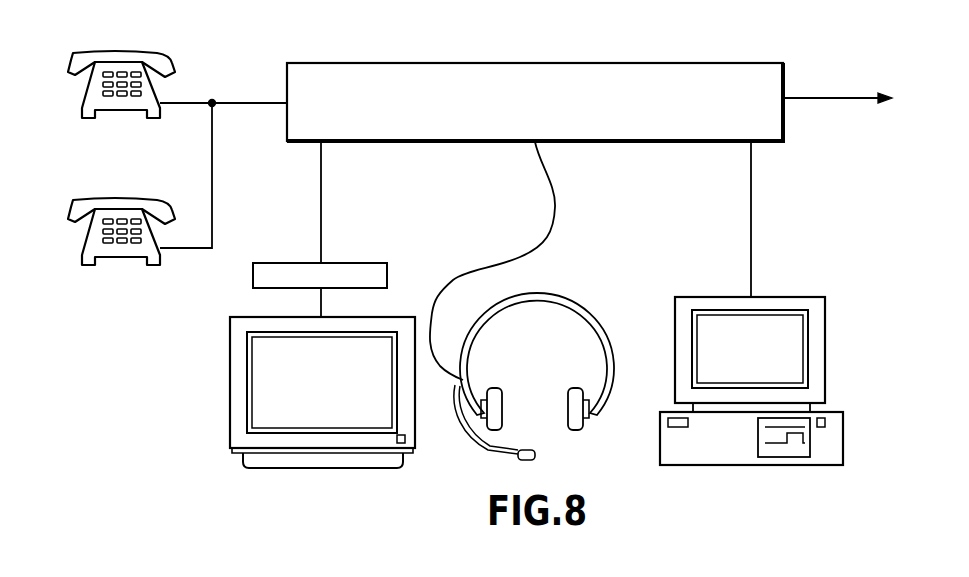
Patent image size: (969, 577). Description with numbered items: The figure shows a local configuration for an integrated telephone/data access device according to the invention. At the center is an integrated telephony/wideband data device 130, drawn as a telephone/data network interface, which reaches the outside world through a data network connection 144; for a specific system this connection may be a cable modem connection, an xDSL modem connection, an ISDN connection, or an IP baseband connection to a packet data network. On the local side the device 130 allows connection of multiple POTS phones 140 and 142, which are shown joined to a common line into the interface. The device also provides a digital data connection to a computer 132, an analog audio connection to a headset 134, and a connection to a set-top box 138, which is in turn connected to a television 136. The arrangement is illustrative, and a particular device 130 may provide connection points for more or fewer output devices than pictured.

The integrated telephony/wideband data device 130 is at (535, 63).
The computer 132 is at (802, 296).
The headset 134 is at (605, 325).
The television 136 is at (229, 386).
The set-top box 138 is at (280, 262).
The POTS phone 140 is at (122, 197).
The POTS phone 142 is at (122, 51).
The data network connection 144 is at (830, 97).